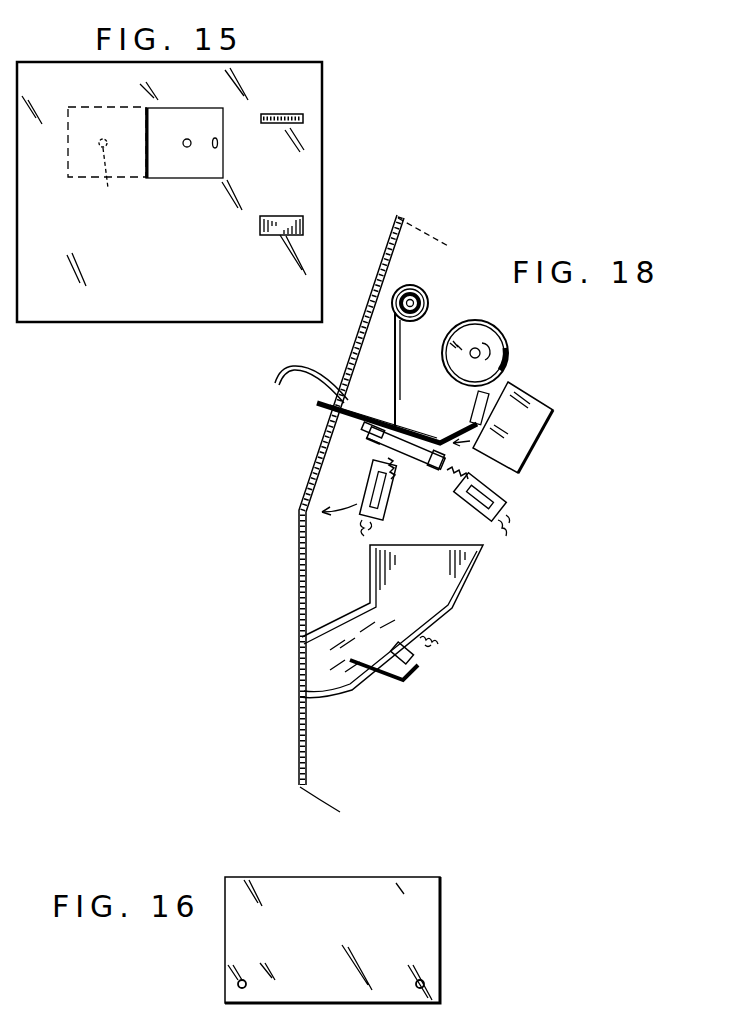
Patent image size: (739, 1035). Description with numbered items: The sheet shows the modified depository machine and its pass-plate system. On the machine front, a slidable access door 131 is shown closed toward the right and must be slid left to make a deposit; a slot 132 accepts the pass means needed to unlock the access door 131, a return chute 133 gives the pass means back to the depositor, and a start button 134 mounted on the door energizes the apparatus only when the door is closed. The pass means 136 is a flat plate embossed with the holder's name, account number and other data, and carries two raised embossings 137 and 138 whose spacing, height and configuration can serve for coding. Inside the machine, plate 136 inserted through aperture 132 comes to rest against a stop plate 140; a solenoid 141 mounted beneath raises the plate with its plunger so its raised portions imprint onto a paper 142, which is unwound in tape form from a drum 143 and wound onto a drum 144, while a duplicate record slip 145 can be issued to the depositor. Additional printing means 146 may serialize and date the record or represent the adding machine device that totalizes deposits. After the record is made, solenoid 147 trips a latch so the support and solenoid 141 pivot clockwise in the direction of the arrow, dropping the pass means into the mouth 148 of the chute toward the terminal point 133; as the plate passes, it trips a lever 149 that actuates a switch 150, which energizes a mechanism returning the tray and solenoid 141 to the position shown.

In FIG. 15, the slidable access door 131 is at (192, 170).
In FIG. 15, the slot 132 is at (295, 123).
In FIG. 18, the slot 132 is at (330, 402).
In FIG. 15, the return chute 133 is at (262, 233).
In FIG. 18, the return chute 133 is at (296, 691).
In FIG. 15, the start button 134 is at (183, 147).
In FIG. 18, the pass means 136 is at (373, 433).
In FIG. 16, the pass means 136 is at (423, 895).
In FIG. 16, the raised embossing 137 is at (424, 983).
In FIG. 16, the raised embossing 138 is at (246, 988).
In FIG. 18, the stop plate 140 is at (428, 470).
In FIG. 18, the solenoid 141 is at (387, 517).
In FIG. 18, the paper 142 is at (399, 380).
In FIG. 18, the drum 143 is at (470, 331).
In FIG. 18, the drum 144 is at (420, 288).
In FIG. 18, the record slip 145 is at (283, 378).
In FIG. 18, the printing means 146 is at (533, 403).
In FIG. 18, the solenoid 147 is at (498, 498).
In FIG. 18, the mouth of the chute 148 is at (470, 575).
In FIG. 18, the lever 149 is at (418, 677).
In FIG. 18, the switch 150 is at (420, 658).